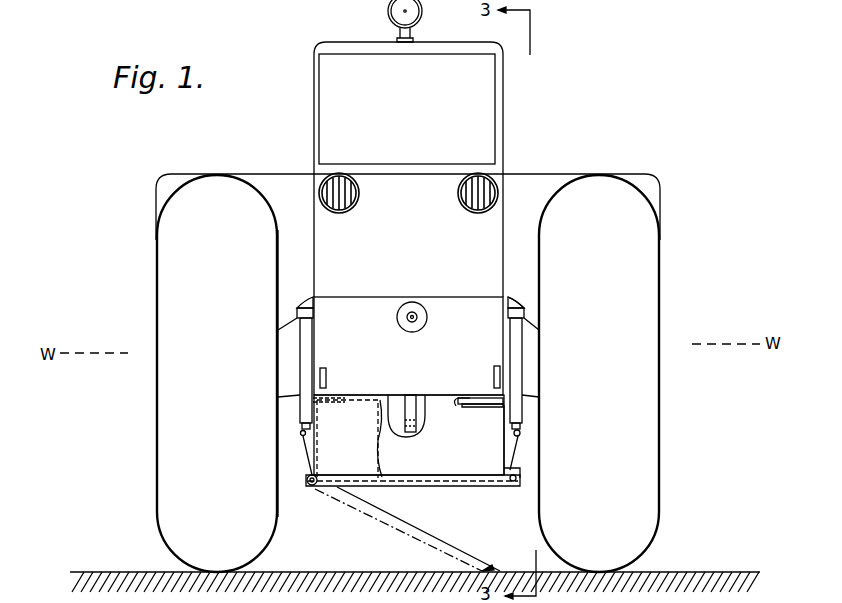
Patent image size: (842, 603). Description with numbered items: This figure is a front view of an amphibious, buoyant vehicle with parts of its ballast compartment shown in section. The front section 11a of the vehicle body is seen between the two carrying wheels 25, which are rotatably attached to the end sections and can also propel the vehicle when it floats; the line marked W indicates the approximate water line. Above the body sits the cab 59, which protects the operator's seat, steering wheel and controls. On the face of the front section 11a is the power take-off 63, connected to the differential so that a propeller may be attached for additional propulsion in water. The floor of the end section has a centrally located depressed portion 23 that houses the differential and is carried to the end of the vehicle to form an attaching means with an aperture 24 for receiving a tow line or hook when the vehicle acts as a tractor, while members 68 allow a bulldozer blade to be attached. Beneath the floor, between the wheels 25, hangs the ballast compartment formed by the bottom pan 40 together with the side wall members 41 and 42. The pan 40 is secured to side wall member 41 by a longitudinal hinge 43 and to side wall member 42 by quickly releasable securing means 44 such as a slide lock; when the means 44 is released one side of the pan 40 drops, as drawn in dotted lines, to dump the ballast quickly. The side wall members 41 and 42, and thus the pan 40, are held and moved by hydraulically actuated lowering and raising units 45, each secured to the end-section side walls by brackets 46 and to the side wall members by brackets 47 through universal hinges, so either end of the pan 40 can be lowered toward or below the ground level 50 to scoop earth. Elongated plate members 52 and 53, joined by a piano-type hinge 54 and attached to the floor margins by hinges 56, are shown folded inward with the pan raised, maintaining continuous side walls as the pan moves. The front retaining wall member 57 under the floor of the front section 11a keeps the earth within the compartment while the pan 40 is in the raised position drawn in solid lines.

The front section 11a is at (472, 303).
The depressed portion 23 is at (424, 405).
The aperture 24 is at (409, 438).
The carrying wheels 25 is at (650, 306).
The bottom pan 40 is at (460, 478).
The side wall member 41 is at (318, 458).
The side wall member 42 is at (504, 450).
The hinge 43 is at (311, 486).
The releasable securing means 44 is at (516, 484).
The lowering and raising units 45 is at (524, 366).
The brackets 46 is at (508, 300).
The brackets 47 is at (521, 434).
The ground level 50 is at (692, 568).
The plate member 52 is at (480, 414).
The plate member 53 is at (472, 388).
The elongated hinge 54 is at (450, 414).
The elongated hinges 56 is at (494, 388).
The front retaining wall member 57 is at (378, 400).
The cab 59 is at (354, 48).
The power take-off 63 is at (396, 317).
The members 68 is at (326, 375).